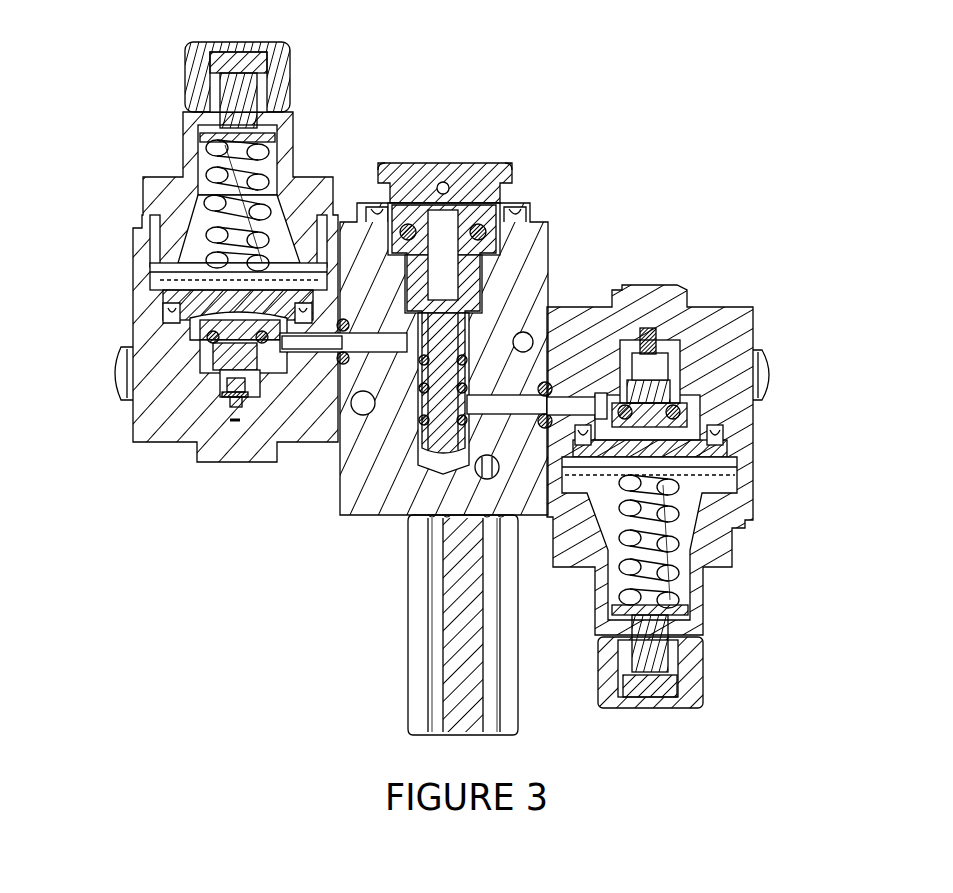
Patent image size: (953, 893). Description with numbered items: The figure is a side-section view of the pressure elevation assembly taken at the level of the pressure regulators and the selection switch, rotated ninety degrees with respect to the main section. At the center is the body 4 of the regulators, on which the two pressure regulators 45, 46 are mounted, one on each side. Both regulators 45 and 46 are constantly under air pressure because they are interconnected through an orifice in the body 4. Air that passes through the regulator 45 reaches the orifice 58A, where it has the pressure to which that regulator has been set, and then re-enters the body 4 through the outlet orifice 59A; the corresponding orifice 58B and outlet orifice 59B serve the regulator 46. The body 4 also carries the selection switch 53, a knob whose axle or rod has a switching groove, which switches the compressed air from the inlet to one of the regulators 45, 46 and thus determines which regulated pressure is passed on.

The body 4 is at (430, 413).
The pressure regulator 45 is at (733, 454).
The pressure regulator 46 is at (158, 432).
The selection switch 53 is at (480, 180).
The orifice 58A is at (567, 407).
The orifice 58B is at (307, 345).
The outlet orifice 59A is at (505, 403).
The outlet orifice 59B is at (364, 347).